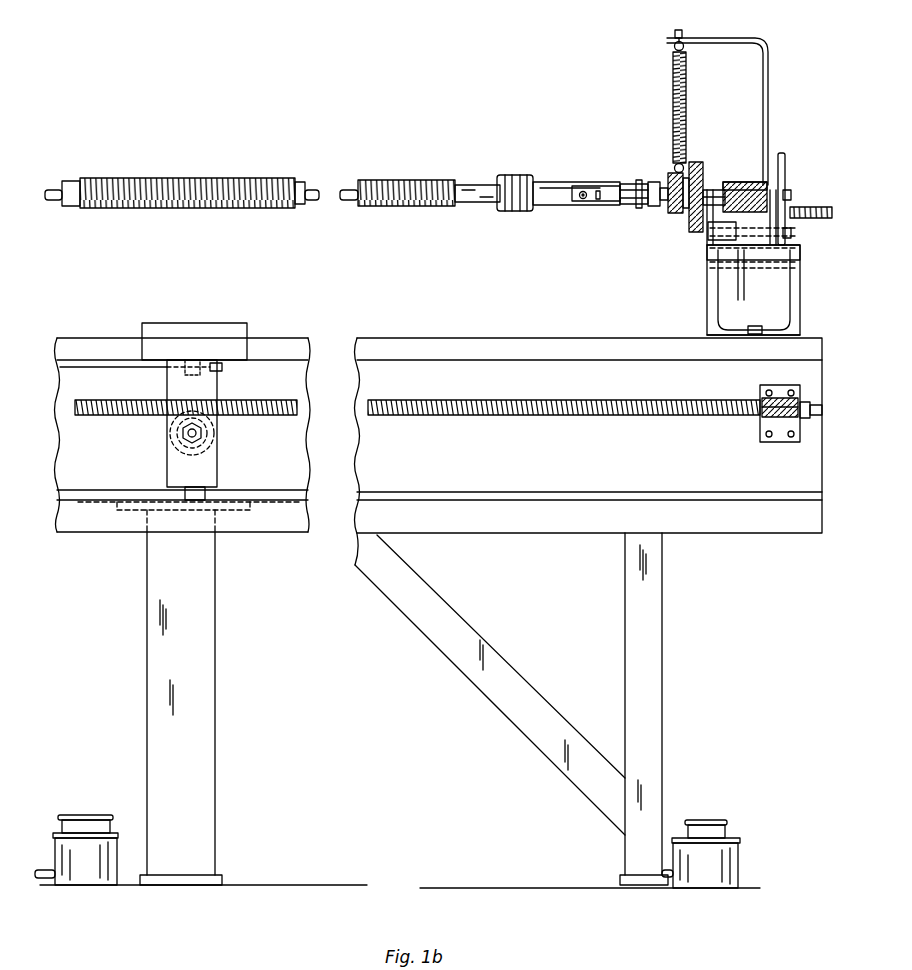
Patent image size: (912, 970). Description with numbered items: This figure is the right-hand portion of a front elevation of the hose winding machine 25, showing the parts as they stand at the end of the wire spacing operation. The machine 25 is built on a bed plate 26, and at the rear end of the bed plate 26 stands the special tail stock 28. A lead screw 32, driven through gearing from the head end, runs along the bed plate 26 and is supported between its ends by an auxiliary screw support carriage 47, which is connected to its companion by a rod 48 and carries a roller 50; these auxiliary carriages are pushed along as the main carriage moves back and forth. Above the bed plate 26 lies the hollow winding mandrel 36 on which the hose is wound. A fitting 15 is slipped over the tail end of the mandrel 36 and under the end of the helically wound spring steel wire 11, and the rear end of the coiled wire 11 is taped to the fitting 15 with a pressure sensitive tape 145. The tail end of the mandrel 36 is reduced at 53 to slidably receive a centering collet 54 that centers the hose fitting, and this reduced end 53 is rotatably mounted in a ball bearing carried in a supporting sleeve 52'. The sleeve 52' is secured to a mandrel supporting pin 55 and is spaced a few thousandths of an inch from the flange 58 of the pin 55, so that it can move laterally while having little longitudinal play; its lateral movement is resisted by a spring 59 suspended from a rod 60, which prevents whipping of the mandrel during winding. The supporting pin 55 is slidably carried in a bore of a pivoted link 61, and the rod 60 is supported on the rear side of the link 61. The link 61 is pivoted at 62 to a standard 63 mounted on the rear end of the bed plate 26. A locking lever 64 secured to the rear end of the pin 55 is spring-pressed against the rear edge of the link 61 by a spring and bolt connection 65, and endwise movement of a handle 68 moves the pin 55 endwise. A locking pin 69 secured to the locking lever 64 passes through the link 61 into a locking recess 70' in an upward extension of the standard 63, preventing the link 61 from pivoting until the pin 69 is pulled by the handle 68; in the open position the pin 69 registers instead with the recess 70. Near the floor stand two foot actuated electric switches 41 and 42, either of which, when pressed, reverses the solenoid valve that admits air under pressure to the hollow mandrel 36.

The helically wound spring steel wire 11 is at (458, 185).
The fitting 15 is at (550, 182).
The pressure sensitive tape 145 is at (518, 175).
The winding mandrel 36 is at (360, 200).
The centering collet 54 is at (632, 184).
The reduced end of mandrel 53 is at (645, 208).
The supporting sleeve 52' is at (658, 213).
The flange 58 is at (696, 162).
The spring 59 is at (686, 95).
The rod 60 is at (705, 38).
The mandrel supporting pin 55 is at (712, 190).
The recess 70 is at (745, 183).
The locking recess 70' is at (700, 243).
The pivoted link 61 is at (752, 182).
The handle 68 is at (785, 170).
The locking lever 64 is at (791, 195).
The spring and bolt connection 65 is at (826, 207).
The locking pin 69 is at (791, 233).
The pivot 62 is at (800, 258).
The tail stock 28 is at (802, 286).
The standard 63 is at (800, 313).
The machine 25 is at (298, 535).
The bed plate 26 is at (440, 338).
The lead screw 32 is at (498, 415).
The rod 48 is at (105, 368).
The screw support carriage 47 is at (167, 462).
The roller 50 is at (208, 440).
The foot actuated electric switch 42 is at (118, 840).
The foot actuated electric switch 41 is at (742, 850).